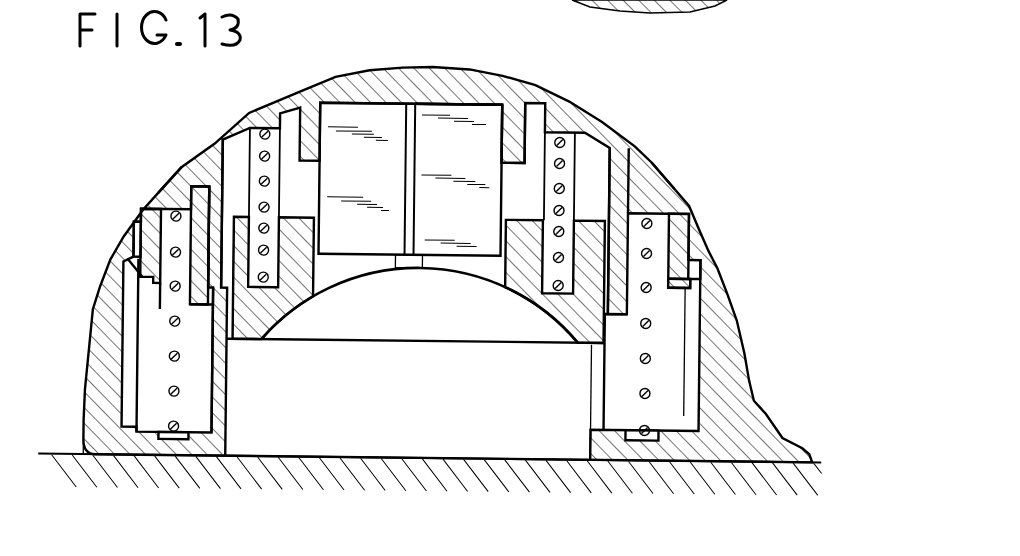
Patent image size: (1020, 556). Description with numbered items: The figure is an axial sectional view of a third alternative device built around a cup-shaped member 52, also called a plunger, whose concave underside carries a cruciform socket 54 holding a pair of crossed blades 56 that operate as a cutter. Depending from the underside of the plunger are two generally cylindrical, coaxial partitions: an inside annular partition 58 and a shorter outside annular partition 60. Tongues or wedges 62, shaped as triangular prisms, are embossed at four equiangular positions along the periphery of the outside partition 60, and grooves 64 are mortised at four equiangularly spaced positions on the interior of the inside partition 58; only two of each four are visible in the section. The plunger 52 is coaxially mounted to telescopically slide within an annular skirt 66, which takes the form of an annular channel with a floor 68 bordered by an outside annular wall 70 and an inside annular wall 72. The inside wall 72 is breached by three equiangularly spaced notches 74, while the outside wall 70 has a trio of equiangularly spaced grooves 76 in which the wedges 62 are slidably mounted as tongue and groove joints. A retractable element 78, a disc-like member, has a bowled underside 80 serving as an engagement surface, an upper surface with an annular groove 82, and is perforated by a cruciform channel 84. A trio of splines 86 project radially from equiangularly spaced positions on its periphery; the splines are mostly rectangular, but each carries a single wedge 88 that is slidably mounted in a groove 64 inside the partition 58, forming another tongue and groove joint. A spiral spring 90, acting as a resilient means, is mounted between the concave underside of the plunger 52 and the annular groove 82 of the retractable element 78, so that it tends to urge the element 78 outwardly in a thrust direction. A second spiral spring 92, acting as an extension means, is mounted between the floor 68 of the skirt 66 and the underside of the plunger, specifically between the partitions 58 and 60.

The cup-shaped member 52 is at (406, 67).
The cruciform socket 54 is at (526, 126).
The crossed blades 56 is at (464, 121).
The inside annular partition 58 is at (190, 303).
The outside annular partition 60 is at (160, 280).
The wedges 62 is at (130, 260).
The grooves 64 is at (208, 200).
The annular skirt 66 is at (80, 394).
The floor 68 is at (168, 446).
The outside annular wall 70 is at (110, 356).
The inside annular wall 72 is at (228, 442).
The notches 74 is at (593, 377).
The grooves 76 is at (138, 421).
The retractable element 78 is at (588, 330).
The bowled underside 80 is at (284, 320).
The annular groove 82 is at (241, 222).
The cruciform channel 84 is at (340, 287).
The splines 86 is at (600, 228).
The wedge 88 is at (632, 280).
The spiral spring 90 is at (270, 157).
The spiral spring 92 is at (180, 395).